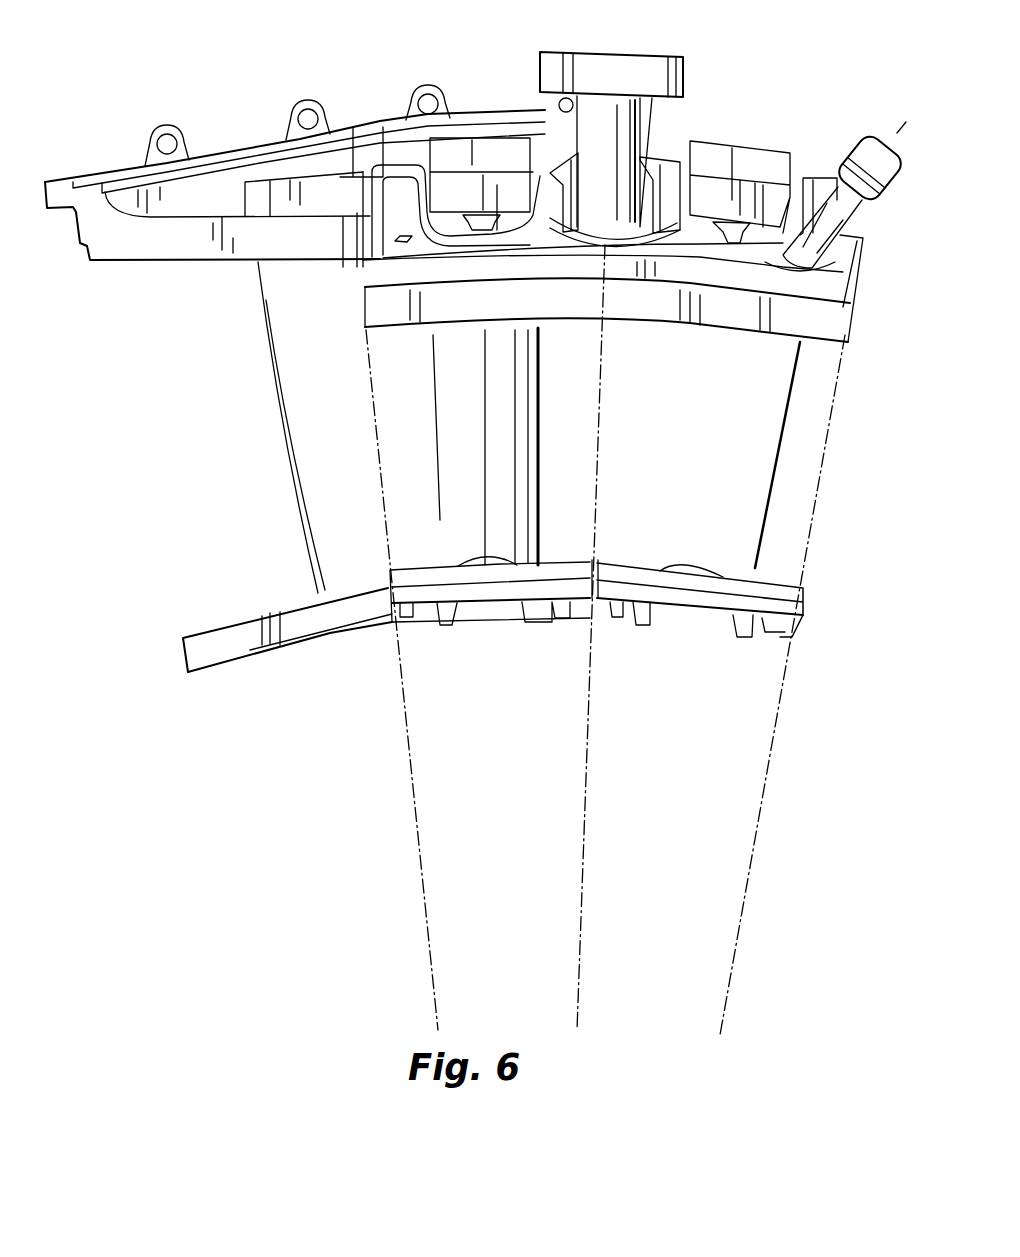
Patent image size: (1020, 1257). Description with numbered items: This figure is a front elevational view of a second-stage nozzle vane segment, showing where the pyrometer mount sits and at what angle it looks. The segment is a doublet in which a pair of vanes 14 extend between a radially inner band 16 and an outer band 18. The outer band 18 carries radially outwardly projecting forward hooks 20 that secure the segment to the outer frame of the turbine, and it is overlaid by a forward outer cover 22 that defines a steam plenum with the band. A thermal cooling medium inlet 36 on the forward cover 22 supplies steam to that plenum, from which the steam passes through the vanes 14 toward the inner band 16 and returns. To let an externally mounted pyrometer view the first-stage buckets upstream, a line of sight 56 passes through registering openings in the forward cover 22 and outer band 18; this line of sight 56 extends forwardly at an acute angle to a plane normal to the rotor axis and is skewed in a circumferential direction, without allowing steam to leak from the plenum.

The vanes 14 is at (297, 346).
The inner band 16 is at (226, 640).
The outer band 18 is at (560, 305).
The forward hooks 20 is at (743, 153).
The forward outer cover 22 is at (668, 243).
The thermal cooling medium inlet 36 is at (610, 62).
The line of sight 56 is at (785, 280).